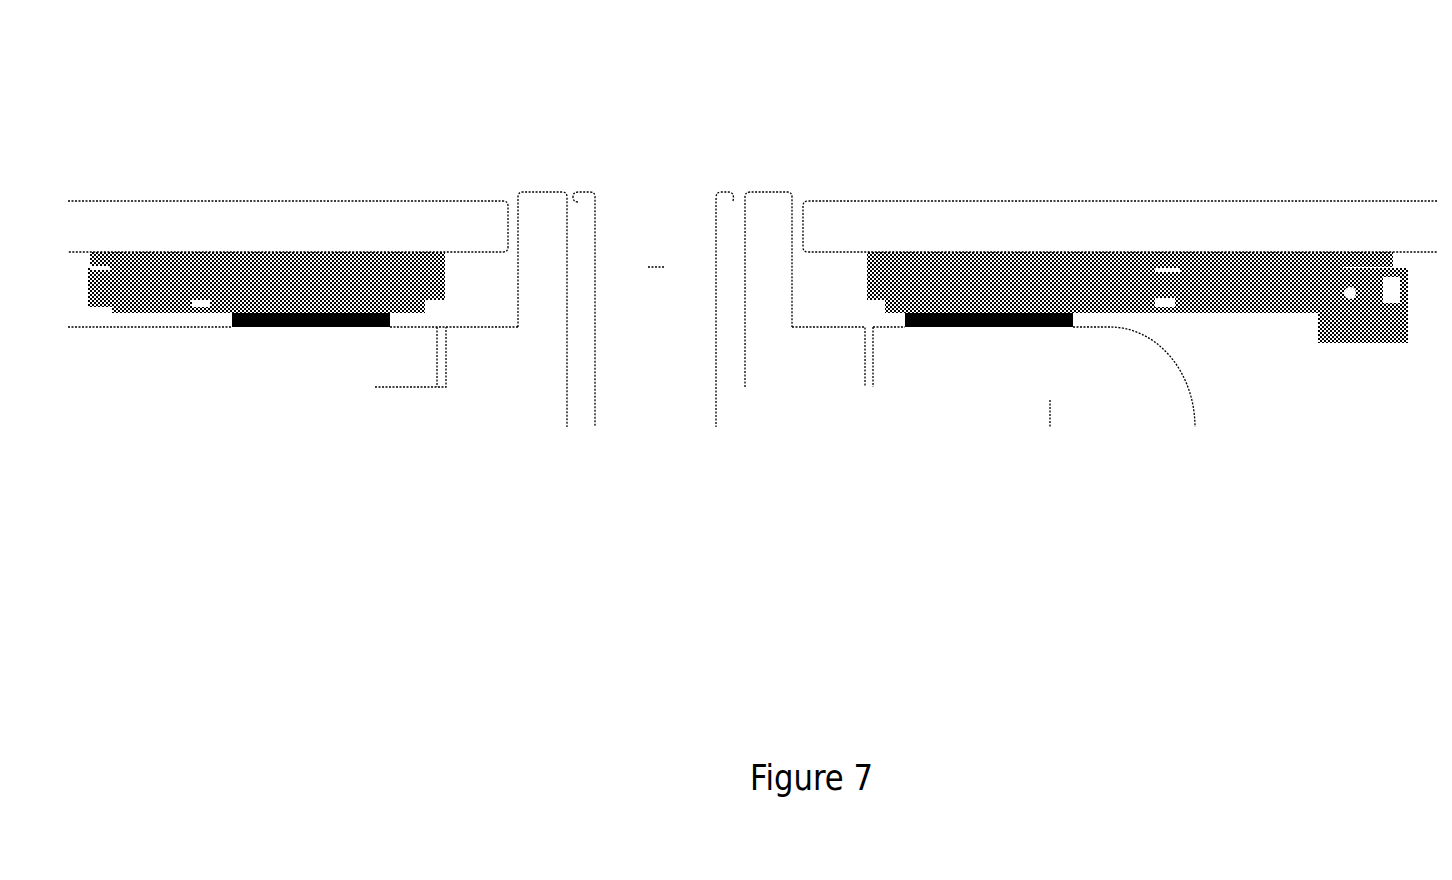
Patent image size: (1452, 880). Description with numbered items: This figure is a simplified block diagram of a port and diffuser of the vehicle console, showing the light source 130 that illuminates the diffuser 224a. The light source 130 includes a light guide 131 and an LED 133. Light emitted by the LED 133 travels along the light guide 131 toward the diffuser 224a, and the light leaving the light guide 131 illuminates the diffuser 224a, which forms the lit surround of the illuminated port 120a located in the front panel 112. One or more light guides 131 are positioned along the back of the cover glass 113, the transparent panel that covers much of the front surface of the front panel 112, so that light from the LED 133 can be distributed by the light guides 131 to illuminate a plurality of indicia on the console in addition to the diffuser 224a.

The front panel 112 is at (457, 212).
The cover glass 113 is at (320, 223).
The illuminated port 120a is at (645, 233).
The diffuser 224a is at (770, 243).
The light source 130 is at (1128, 272).
The light guide 131 is at (182, 285).
The LED 133 is at (1347, 290).